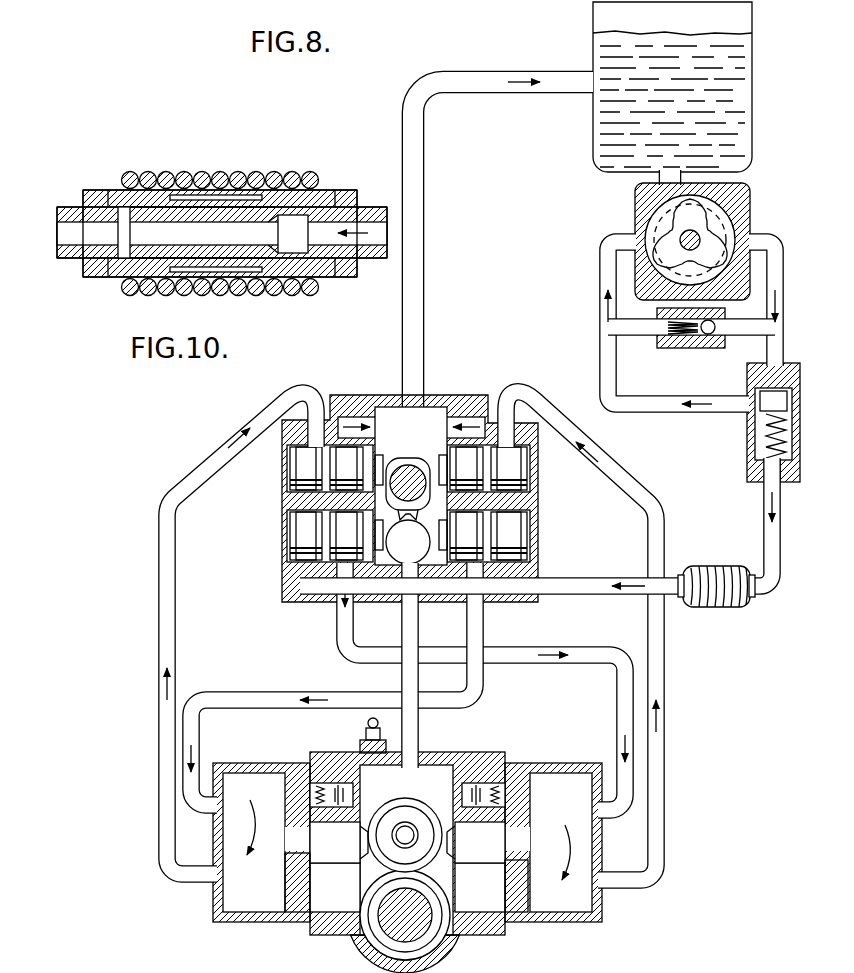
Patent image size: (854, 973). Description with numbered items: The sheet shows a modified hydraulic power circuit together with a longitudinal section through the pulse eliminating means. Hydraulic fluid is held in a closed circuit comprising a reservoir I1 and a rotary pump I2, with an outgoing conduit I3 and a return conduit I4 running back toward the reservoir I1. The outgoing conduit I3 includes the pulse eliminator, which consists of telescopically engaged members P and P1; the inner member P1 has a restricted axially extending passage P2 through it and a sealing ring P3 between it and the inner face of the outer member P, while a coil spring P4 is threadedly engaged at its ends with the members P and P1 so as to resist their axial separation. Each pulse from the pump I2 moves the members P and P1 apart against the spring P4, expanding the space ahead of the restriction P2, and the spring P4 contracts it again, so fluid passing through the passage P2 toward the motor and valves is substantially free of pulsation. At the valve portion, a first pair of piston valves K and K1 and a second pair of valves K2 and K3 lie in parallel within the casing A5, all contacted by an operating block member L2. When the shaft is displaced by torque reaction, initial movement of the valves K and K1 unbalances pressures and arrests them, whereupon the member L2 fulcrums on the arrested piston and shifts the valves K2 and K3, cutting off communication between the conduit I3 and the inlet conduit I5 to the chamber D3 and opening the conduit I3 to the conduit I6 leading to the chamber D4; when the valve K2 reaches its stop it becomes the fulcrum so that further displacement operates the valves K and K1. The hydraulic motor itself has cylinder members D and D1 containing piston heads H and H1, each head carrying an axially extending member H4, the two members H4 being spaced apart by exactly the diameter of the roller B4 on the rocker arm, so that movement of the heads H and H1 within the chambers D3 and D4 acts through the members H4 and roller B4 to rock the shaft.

In FIG. 8, the telescoping outer member P is at (96, 278).
In FIG. 10, the telescoping outer member P is at (690, 607).
In FIG. 8, the telescoping inner member P1 is at (218, 215).
In FIG. 10, the telescoping inner member P1 is at (755, 598).
In FIG. 8, the restricted axial passage P2 is at (140, 240).
In FIG. 8, the sealing ring P3 is at (150, 205).
In FIG. 8, the coil spring P4 is at (298, 172).
In FIG. 10, the coil spring P4 is at (700, 566).
In FIG. 10, the reservoir I1 is at (752, 118).
In FIG. 10, the rotary pump I2 is at (750, 222).
In FIG. 10, the outgoing conduit I3 is at (780, 548).
In FIG. 10, the return conduit I4 is at (520, 95).
In FIG. 10, the inlet conduit to chamber D3 I5 is at (285, 585).
In FIG. 10, the conduit to chamber D4 I6 is at (508, 592).
In FIG. 10, the piston valve K is at (285, 482).
In FIG. 10, the piston valve K1 is at (535, 485).
In FIG. 10, the manually controlled piston valve K2 is at (285, 538).
In FIG. 10, the manually controlled piston valve K3 is at (540, 520).
In FIG. 10, the operating block member L2 is at (410, 460).
In FIG. 10, the valve casing A5 is at (310, 605).
In FIG. 10, the roller B4 is at (427, 805).
In FIG. 10, the axially extending member H4 is at (407, 842).
In FIG. 10, the piston head H is at (296, 912).
In FIG. 10, the piston head H1 is at (517, 912).
In FIG. 10, the cylinder member D is at (268, 922).
In FIG. 10, the cylinder member D1 is at (568, 922).
In FIG. 10, the hydraulic chamber D3 is at (266, 842).
In FIG. 10, the hydraulic chamber D4 is at (548, 842).